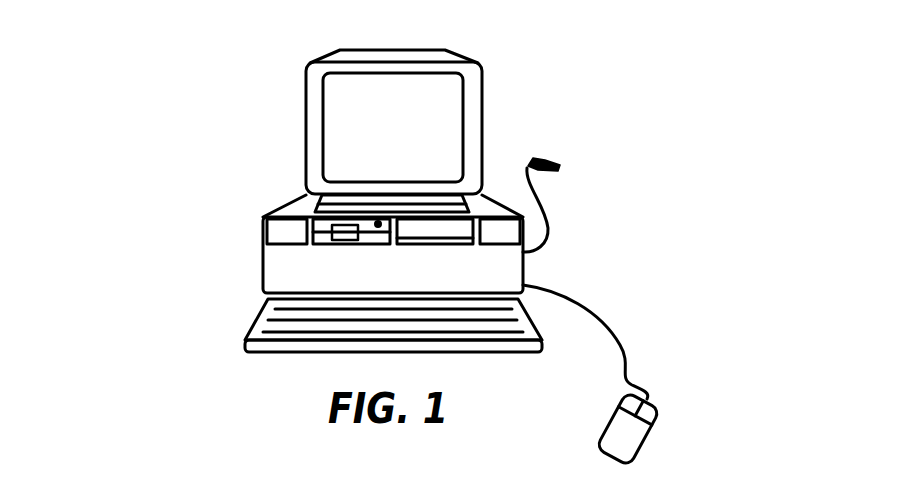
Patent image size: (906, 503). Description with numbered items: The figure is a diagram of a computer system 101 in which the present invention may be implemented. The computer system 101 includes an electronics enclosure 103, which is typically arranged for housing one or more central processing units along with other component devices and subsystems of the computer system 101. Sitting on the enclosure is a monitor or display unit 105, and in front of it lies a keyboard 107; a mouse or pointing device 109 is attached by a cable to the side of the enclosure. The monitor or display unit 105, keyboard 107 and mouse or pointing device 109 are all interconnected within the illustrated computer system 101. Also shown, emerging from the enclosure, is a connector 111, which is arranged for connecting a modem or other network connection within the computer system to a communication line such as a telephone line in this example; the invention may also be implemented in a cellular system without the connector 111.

The computer system 101 is at (686, 257).
The electronics enclosure 103 is at (262, 255).
The monitor or display unit 105 is at (306, 140).
The keyboard 107 is at (244, 340).
The mouse or pointing device 109 is at (663, 412).
The connector 111 is at (547, 155).